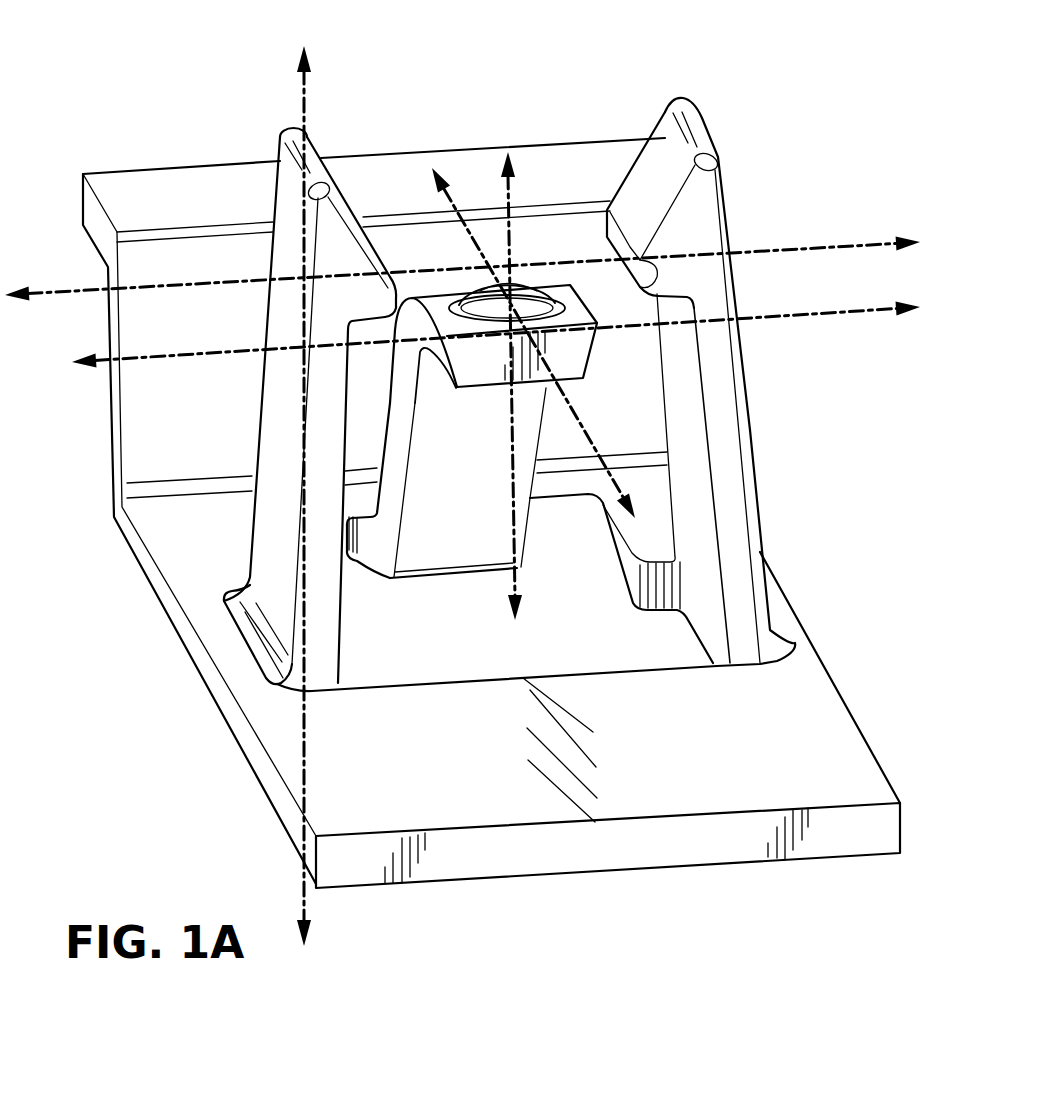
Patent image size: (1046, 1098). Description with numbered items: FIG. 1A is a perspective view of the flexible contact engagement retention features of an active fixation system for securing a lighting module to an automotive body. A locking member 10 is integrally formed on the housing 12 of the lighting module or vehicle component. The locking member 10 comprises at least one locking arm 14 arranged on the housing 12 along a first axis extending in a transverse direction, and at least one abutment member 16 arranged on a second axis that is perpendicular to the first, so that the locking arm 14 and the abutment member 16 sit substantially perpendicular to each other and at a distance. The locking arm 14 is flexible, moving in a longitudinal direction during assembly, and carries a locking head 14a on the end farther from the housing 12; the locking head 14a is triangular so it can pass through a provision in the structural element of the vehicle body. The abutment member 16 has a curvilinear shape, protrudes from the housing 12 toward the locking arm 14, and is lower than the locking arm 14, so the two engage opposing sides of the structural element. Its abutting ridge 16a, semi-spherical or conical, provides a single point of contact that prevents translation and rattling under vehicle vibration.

The locking member 10 is at (98, 84).
The housing 12 is at (300, 718).
The locking arm 14 is at (272, 451).
The locking head 14a is at (652, 181).
The abutment member 16 is at (487, 413).
The abutting ridge 16a is at (528, 296).